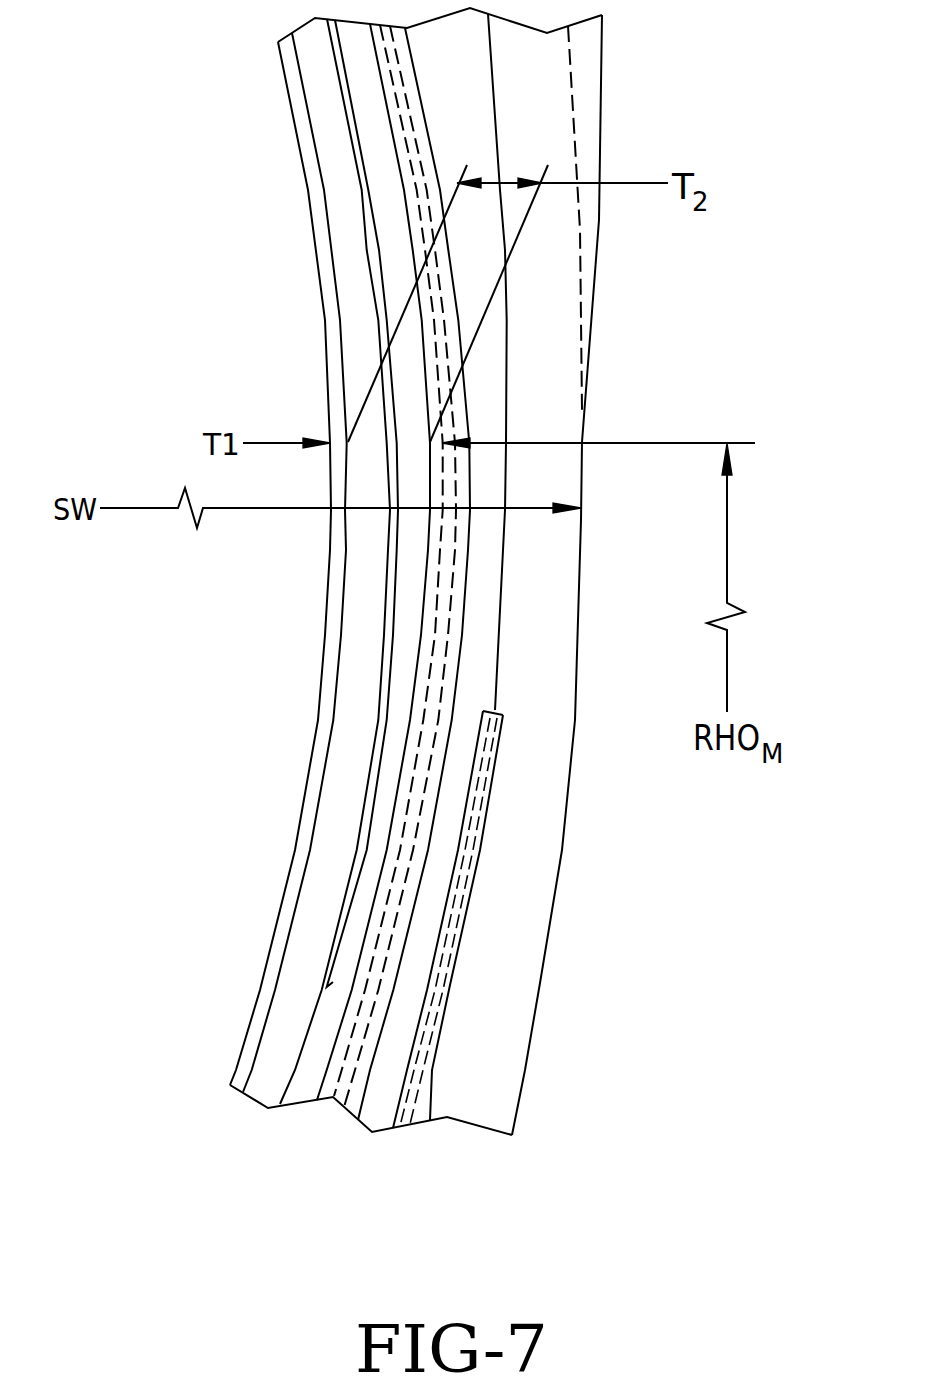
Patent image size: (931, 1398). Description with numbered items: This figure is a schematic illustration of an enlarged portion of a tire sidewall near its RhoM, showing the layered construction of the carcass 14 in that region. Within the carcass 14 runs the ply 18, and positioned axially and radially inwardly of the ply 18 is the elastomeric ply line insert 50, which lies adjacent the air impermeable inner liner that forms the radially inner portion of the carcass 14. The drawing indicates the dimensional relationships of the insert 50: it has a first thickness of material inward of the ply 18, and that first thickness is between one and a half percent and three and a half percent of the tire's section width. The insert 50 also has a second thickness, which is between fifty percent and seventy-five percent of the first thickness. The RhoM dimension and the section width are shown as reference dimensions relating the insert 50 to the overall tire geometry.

The carcass 14 is at (432, 660).
The ply 18 is at (430, 760).
The elastomeric ply line insert 50 is at (312, 1107).